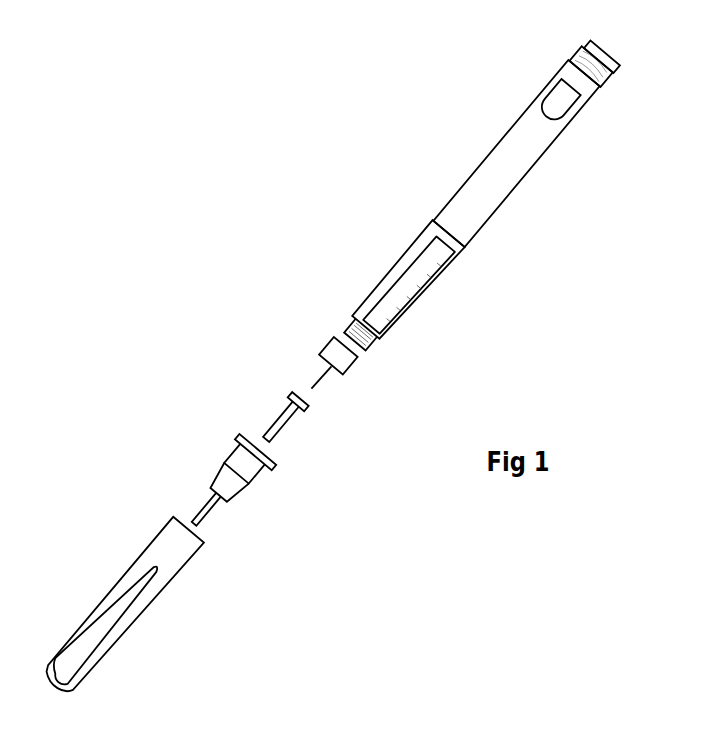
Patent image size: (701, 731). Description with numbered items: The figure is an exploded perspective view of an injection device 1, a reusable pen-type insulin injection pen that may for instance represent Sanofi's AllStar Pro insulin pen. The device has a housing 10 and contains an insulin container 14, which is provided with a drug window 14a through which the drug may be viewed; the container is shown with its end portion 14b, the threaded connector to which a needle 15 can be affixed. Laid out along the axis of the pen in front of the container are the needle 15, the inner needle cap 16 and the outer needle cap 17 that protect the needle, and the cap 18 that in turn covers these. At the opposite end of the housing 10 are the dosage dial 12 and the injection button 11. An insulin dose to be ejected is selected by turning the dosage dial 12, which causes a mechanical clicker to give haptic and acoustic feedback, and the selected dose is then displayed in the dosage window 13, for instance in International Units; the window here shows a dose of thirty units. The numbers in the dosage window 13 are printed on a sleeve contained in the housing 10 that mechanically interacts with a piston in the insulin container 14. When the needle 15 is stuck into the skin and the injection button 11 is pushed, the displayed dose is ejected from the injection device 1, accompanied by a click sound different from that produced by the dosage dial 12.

The injection device 1 is at (380, 185).
The housing 10 is at (490, 157).
The injection button 11 is at (613, 44).
The dosage dial 12 is at (565, 49).
The dosage window 13 is at (548, 101).
The insulin container 14 is at (398, 271).
The drug window 14a is at (426, 269).
The threaded neck of cartridge holder 14b is at (368, 343).
The needle 15 is at (332, 351).
The inner needle cap 16 is at (282, 419).
The outer needle cap 17 is at (237, 453).
The cap 18 is at (158, 541).